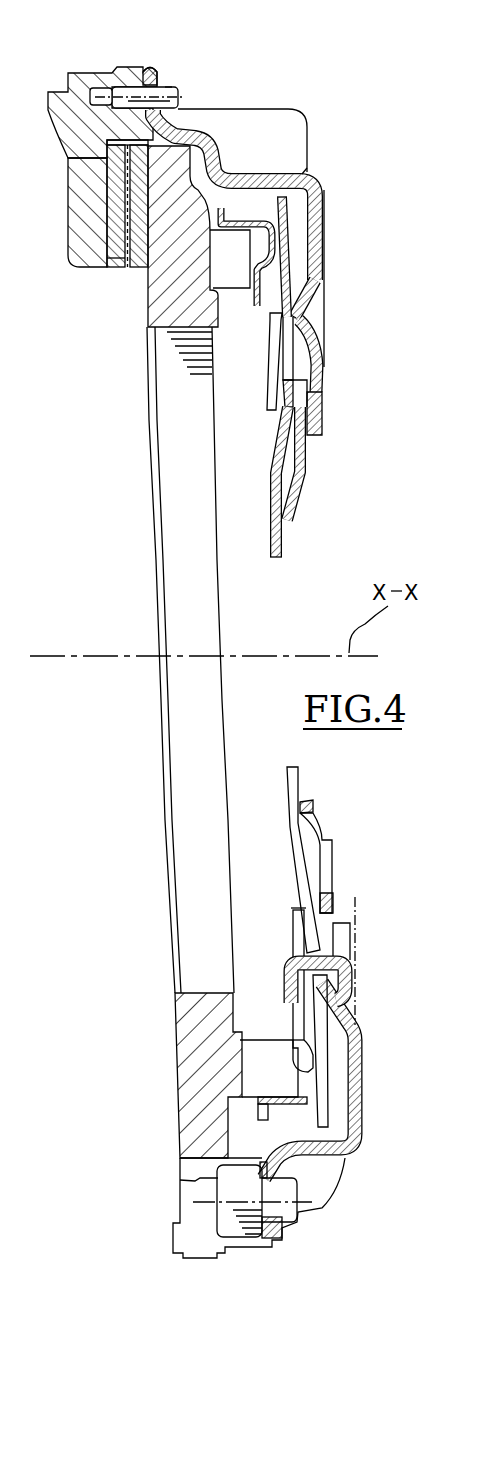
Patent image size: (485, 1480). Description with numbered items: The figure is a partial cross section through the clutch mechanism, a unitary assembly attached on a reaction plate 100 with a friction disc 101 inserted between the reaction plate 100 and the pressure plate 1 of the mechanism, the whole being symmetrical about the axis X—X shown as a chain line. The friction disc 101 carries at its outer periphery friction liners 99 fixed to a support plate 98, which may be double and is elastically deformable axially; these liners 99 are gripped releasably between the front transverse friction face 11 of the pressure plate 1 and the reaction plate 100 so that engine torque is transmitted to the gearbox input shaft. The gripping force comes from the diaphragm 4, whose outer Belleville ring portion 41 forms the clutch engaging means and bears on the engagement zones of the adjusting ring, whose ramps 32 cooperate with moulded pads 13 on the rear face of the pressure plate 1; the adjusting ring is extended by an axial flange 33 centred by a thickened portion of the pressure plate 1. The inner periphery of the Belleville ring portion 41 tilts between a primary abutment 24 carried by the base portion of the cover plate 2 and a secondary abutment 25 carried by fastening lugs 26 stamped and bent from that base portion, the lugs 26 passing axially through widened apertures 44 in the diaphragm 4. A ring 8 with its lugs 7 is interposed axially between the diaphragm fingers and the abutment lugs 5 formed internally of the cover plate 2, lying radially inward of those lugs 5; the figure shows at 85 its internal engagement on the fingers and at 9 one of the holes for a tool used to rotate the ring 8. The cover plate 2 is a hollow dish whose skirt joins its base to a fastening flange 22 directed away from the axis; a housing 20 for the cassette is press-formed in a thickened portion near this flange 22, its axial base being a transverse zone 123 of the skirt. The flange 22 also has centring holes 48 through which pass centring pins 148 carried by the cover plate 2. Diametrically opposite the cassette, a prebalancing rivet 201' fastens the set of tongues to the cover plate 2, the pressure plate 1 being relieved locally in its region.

The pressure plate 1 is at (183, 308).
The cover plate 2 is at (322, 177).
The diaphragm 4 is at (296, 216).
The abutment lugs 5 is at (323, 420).
The lugs 7 is at (312, 447).
The ring 8 is at (308, 472).
The hole 9 is at (327, 848).
The front transverse friction face 11 is at (107, 158).
The pads 13 is at (235, 252).
The housing 20 is at (285, 107).
The fastening flange 22 is at (150, 70).
The primary abutment 24 is at (298, 320).
The secondary abutment 25 is at (272, 322).
The fastening lugs 26 is at (347, 980).
The ramps 32 is at (255, 280).
The flange 33 is at (265, 187).
The Belleville ring portion 41 is at (290, 293).
The widened apertures 44 is at (310, 408).
The centring holes 48 is at (170, 85).
The internal engagement 85 is at (317, 812).
The support plate 98 is at (128, 273).
The friction liners 99 is at (135, 215).
The reaction plate 100 is at (85, 177).
The friction disc 101 is at (113, 260).
The transverse zone 123 is at (308, 168).
The centring pins 148 is at (170, 86).
The prebalancing rivet 201' is at (270, 1185).